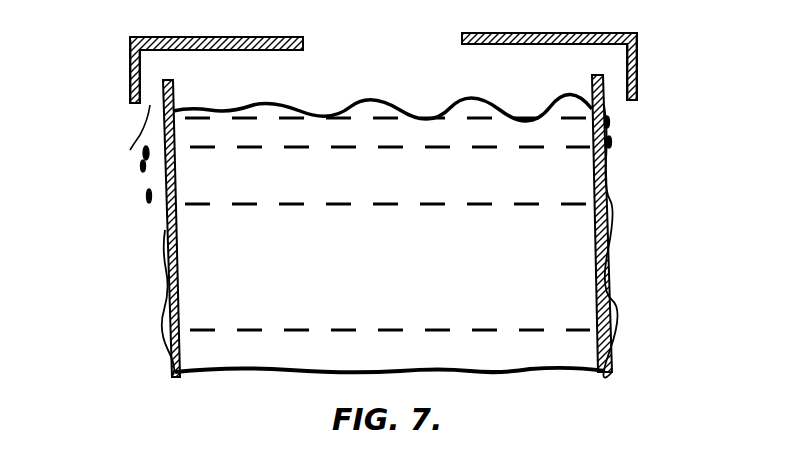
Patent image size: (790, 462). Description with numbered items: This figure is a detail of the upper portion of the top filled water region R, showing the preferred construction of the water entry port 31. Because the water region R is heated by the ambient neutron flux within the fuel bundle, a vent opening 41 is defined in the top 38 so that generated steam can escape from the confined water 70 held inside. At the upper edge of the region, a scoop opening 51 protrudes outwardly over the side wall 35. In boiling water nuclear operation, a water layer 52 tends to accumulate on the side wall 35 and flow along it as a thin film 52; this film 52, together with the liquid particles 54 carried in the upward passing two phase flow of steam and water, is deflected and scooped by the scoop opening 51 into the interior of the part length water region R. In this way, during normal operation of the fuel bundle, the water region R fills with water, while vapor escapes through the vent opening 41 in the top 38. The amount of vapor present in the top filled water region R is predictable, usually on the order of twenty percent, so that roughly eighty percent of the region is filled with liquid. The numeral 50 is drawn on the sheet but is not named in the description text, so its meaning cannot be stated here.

The water entry port 31 is at (120, 90).
The side wall 35 is at (172, 343).
The top 38 is at (530, 33).
The vent opening 41 is at (304, 45).
The region near wall 50 is at (148, 107).
The scoop opening 51 is at (130, 68).
The water layer 52 is at (165, 258).
The liquid particles 54 is at (150, 148).
The confined water 70 is at (278, 192).
The top filled water region R is at (495, 186).